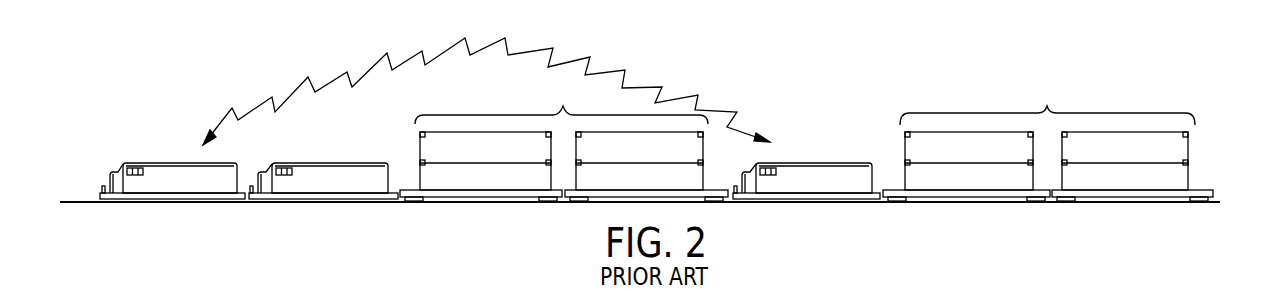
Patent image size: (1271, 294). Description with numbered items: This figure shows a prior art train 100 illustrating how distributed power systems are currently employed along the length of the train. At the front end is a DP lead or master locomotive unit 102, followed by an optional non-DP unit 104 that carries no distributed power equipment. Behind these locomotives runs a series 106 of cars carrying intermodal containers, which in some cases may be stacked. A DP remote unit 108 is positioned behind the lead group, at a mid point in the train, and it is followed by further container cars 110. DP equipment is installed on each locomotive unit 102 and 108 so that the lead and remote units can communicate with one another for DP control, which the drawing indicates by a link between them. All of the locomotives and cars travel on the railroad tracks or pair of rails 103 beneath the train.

The train 100 is at (1153, 50).
The DP lead locomotive unit 102 is at (192, 173).
The railroad tracks 103 is at (66, 201).
The non-DP unit 104 is at (342, 173).
The series of intermodal containers in cars 106 is at (564, 139).
The DP remote unit 108 is at (825, 172).
The second group of rail cars 110 is at (1048, 140).